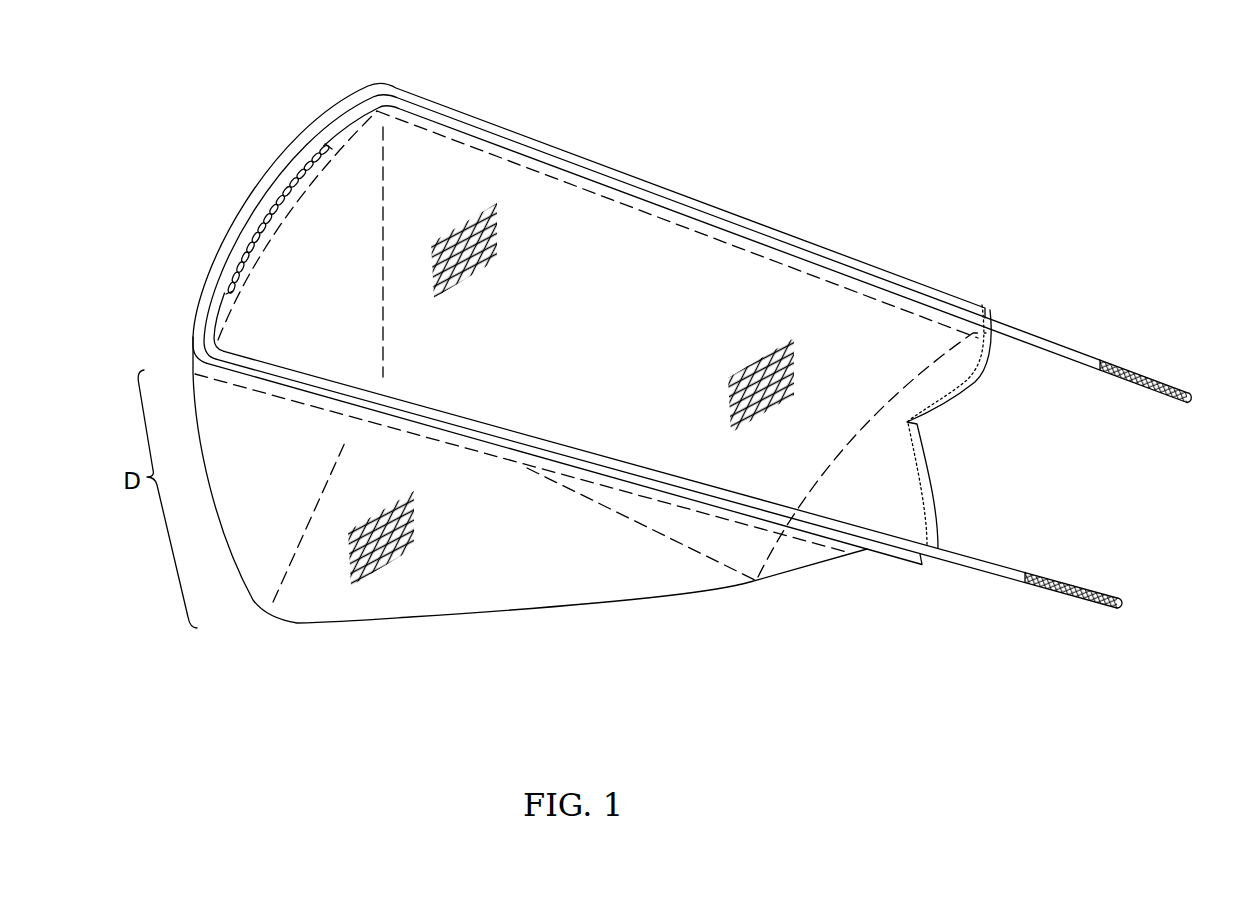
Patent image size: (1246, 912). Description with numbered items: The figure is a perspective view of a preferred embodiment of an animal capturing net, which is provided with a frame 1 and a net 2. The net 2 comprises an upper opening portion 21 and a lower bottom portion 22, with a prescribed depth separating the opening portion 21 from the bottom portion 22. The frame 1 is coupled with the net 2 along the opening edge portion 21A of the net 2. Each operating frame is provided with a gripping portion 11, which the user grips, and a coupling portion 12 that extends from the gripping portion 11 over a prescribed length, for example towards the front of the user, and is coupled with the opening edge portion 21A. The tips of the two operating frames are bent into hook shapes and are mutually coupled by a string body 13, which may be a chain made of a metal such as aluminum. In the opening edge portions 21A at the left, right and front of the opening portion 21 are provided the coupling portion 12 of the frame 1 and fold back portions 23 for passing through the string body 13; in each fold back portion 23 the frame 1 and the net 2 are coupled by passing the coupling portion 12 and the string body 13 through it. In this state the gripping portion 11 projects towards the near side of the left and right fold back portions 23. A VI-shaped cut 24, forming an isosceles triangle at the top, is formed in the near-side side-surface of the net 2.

The frame 1 is at (1045, 338).
The net 2 is at (420, 622).
The gripping portion 11 is at (1152, 378).
The coupling portion 12 is at (497, 140).
The string body 13 is at (295, 180).
The opening portion 21 is at (653, 240).
The opening edge portion 21A is at (603, 163).
The bottom portion 22 is at (567, 583).
The fold back portion 23 is at (777, 258).
The VI-shaped cut 24 is at (947, 437).